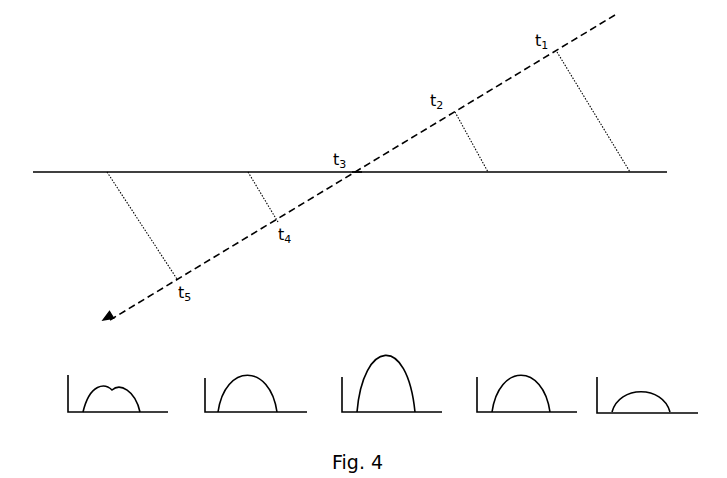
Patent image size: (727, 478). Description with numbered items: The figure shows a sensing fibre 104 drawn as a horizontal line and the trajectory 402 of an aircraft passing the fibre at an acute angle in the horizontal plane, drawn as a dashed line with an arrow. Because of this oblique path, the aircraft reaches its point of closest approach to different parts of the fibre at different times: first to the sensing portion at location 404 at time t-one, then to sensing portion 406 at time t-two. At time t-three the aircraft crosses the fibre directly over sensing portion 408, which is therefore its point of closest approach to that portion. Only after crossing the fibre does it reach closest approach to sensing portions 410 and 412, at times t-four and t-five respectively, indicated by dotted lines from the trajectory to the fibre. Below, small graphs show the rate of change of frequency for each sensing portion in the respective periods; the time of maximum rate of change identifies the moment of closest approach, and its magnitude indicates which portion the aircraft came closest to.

The sensing fibre 104 is at (63, 172).
The trajectory 402 is at (340, 178).
The sensing portion 404 is at (599, 132).
The sensing portion 406 is at (476, 160).
The sensing portion 408 is at (360, 189).
The sensing portion 410 is at (250, 184).
The sensing portion 412 is at (136, 211).